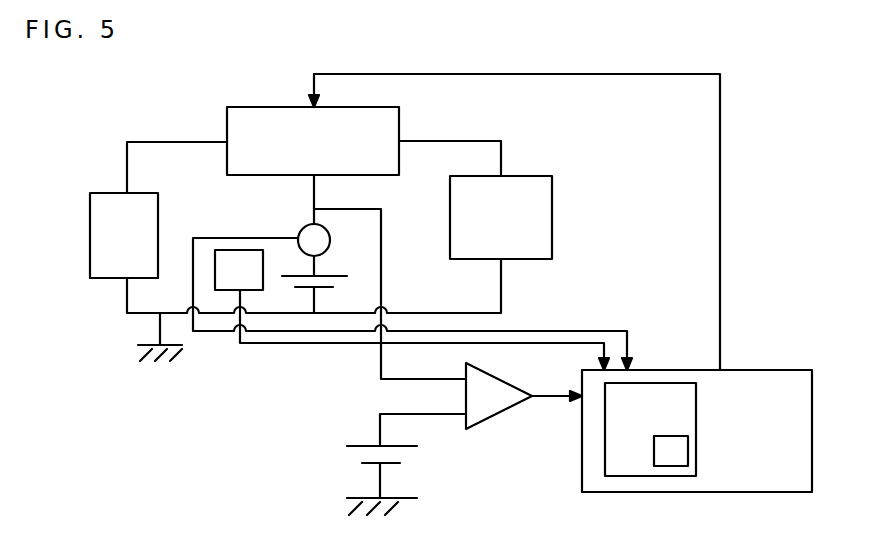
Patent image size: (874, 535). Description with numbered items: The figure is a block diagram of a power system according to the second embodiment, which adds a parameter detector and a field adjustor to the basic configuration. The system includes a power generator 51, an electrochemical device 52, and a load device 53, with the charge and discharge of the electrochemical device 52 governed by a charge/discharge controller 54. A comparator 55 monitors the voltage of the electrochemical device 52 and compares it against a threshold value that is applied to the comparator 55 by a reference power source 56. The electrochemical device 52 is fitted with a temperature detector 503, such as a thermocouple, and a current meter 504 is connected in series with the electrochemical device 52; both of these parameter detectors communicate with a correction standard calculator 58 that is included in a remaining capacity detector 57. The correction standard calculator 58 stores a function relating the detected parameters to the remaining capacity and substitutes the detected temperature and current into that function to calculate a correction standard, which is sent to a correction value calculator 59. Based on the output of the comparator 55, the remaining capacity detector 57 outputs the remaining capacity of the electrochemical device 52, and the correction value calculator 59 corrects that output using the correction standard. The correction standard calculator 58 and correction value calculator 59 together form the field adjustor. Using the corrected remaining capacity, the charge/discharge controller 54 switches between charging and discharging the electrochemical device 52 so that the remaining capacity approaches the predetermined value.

The power generator 51 is at (144, 208).
The electrochemical device 52 is at (347, 276).
The load device 53 is at (535, 202).
The charge/discharge controller 54 is at (273, 122).
The comparator 55 is at (497, 404).
The reference power source 56 is at (366, 446).
The remaining capacity detector 57 is at (757, 383).
The correction standard calculator 58 is at (632, 462).
The correction value calculator 59 is at (676, 452).
The temperature detector 503 is at (223, 276).
The current meter 504 is at (301, 230).